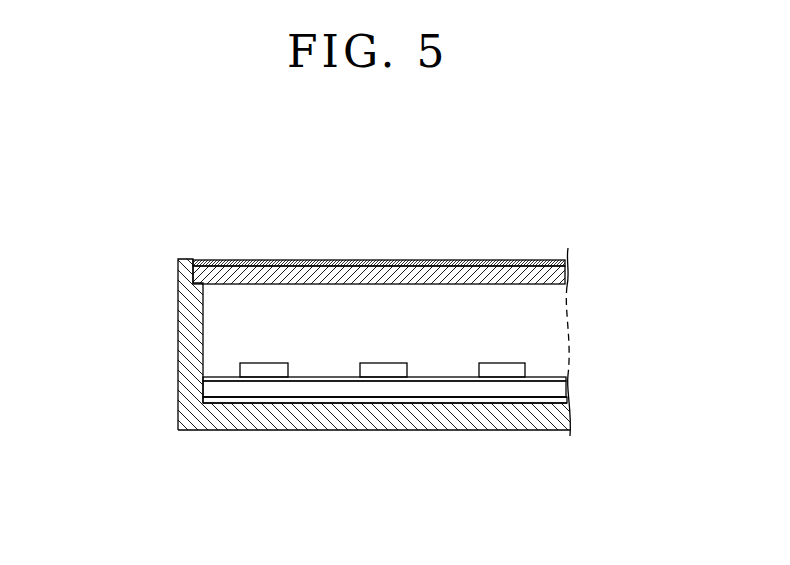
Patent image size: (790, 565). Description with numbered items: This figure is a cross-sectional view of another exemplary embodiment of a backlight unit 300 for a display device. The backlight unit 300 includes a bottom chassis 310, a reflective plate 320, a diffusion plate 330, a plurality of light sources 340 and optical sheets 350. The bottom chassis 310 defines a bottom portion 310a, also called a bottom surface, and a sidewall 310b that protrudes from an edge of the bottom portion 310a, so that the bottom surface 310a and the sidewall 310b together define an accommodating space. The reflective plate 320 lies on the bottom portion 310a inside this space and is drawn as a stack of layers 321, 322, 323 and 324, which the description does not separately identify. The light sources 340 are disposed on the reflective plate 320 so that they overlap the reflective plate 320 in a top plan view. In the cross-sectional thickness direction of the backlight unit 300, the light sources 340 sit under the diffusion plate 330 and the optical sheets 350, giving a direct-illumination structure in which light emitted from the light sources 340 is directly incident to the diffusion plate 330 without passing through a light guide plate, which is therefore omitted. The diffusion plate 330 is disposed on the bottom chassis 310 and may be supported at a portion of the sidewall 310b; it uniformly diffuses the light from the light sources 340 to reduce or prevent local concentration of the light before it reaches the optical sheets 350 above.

The backlight unit 300 is at (506, 210).
The bottom chassis 310 is at (73, 363).
The bottom portion 310a is at (262, 420).
The sidewall 310b is at (183, 368).
The reflective plate 320 is at (495, 493).
The substrate 321 is at (428, 389).
The reflective layer 322 is at (327, 404).
The electrode layer 323 is at (477, 379).
The insulating layer 324 is at (380, 395).
The diffusion plate 330 is at (556, 277).
The light source 340 is at (505, 368).
The optical sheets 350 is at (557, 263).